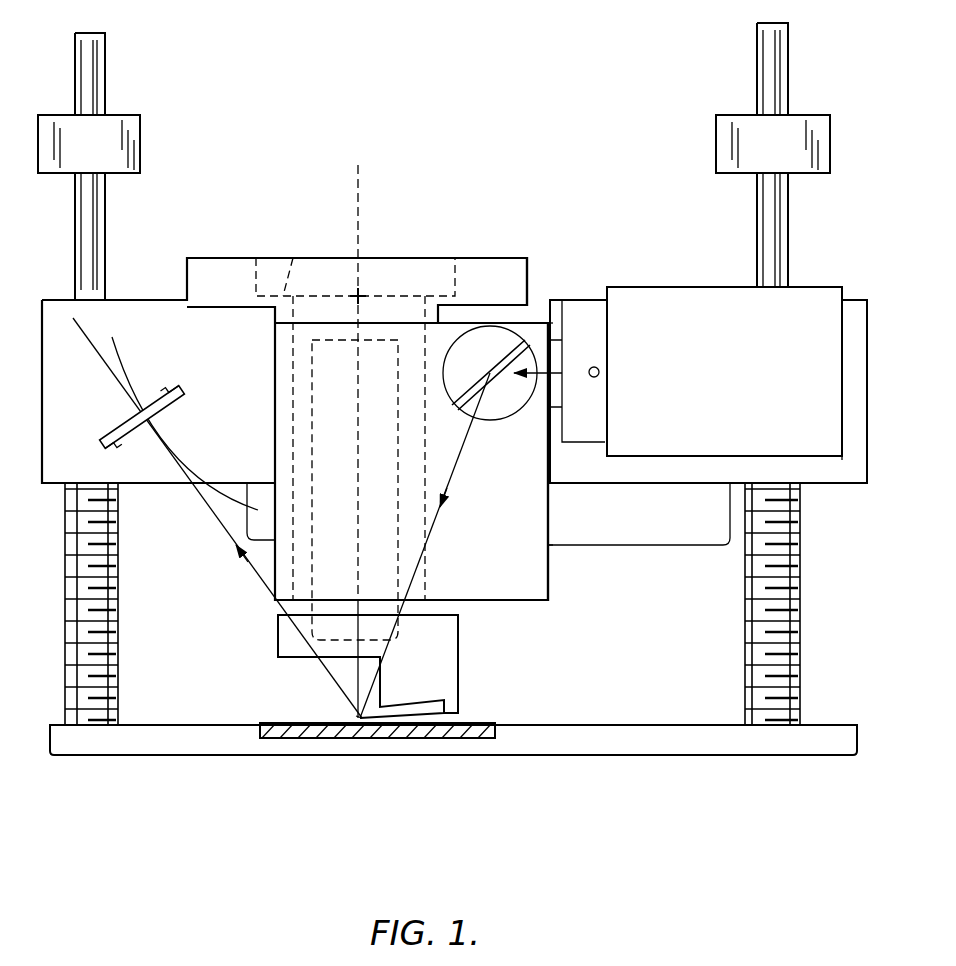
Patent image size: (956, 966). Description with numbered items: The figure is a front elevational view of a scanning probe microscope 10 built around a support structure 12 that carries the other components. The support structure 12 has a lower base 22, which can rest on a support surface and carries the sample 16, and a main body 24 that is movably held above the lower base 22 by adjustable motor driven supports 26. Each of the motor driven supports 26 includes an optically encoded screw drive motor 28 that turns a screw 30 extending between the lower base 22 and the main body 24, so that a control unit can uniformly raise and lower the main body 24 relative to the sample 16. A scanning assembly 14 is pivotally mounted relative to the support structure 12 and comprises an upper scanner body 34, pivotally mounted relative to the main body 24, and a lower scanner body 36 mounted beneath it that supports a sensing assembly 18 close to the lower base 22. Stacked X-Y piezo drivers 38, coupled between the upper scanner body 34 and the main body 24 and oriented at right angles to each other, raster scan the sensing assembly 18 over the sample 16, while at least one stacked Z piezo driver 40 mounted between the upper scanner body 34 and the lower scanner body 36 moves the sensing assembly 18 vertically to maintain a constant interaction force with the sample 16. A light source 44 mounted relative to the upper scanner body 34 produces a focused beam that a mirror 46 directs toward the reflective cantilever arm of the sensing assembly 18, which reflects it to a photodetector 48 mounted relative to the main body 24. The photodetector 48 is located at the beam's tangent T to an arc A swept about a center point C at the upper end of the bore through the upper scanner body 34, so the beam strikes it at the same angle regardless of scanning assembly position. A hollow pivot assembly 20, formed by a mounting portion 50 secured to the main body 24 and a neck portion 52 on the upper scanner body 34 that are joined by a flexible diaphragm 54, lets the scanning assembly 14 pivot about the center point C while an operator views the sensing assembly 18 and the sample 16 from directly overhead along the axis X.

The scanning probe microscope 10 is at (840, 212).
The support structure 12 is at (558, 295).
The scanning assembly 14 is at (555, 601).
The sample 16 is at (475, 722).
The sensing assembly 18 is at (349, 713).
The hollow pivot assembly 20 is at (520, 253).
The lower base 22 is at (628, 722).
The main body 24 is at (832, 486).
The adjustable motor driven support 26 is at (109, 60).
The optically encoded screw drive motor 28 is at (140, 142).
The screw 30 is at (118, 585).
The upper scanner body 34 is at (550, 553).
The lower scanner body 36 is at (458, 655).
The stacked X-Y piezo driver 38 is at (262, 540).
The stacked Z piezo driver 40 is at (308, 398).
The light source 44 is at (842, 372).
The mirror 46 is at (497, 360).
The photodetector 48 is at (118, 436).
The mounting portion 50 is at (556, 296).
The neck portion 52 is at (445, 312).
The flexible diaphragm 54 is at (292, 258).
The axis X is at (362, 190).
The center point C is at (360, 296).
The tangent T is at (92, 352).
The arc A is at (120, 357).